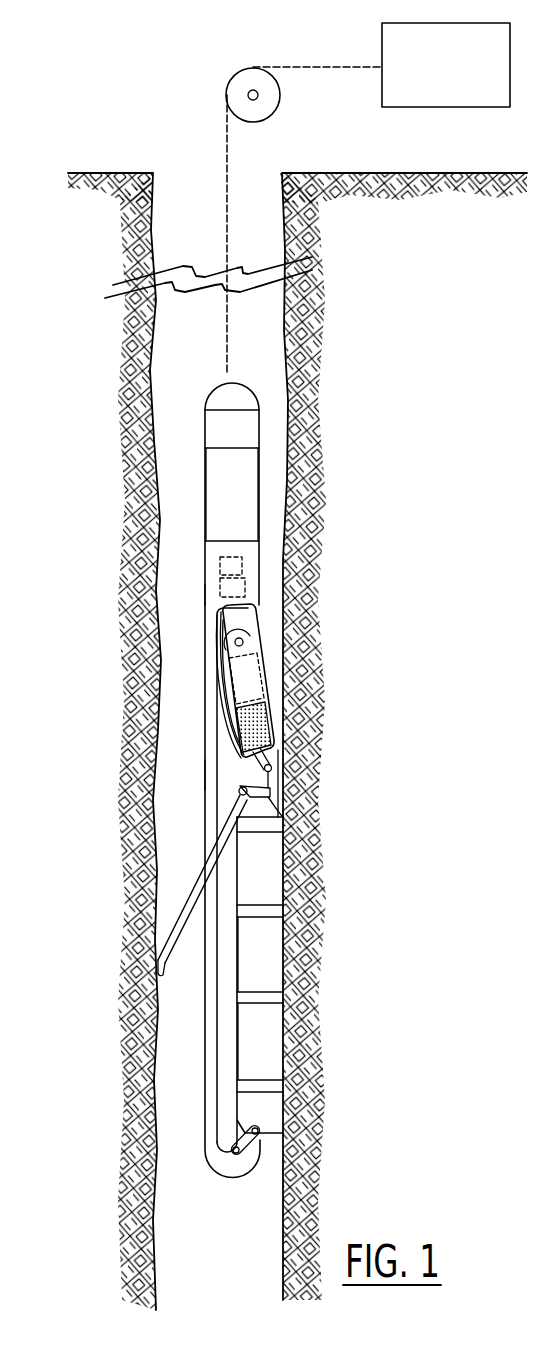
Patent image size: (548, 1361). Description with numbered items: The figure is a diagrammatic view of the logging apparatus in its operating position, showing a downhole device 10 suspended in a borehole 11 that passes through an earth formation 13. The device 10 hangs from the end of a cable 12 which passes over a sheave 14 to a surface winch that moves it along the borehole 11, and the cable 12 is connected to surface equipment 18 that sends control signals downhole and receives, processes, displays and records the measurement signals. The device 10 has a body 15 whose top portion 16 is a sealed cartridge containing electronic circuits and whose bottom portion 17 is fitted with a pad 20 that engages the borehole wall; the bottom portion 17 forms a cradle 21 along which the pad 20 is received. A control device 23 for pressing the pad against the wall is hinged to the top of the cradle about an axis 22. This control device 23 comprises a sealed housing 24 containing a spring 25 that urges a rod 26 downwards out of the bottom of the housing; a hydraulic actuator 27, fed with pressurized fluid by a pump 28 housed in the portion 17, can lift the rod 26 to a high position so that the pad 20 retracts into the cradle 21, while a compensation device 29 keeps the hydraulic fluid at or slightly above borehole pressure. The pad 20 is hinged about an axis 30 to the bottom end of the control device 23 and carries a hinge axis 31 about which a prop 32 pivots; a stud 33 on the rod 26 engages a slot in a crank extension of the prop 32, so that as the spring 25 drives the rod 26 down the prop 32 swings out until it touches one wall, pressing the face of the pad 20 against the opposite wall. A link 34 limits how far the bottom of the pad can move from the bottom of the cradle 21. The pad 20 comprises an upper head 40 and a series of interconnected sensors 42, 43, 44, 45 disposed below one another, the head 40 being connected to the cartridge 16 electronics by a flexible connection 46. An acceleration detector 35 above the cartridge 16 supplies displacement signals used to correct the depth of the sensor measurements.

The downhole device 10 is at (196, 510).
The borehole 11 is at (263, 302).
The cable 12 is at (225, 167).
The earth formation 13 is at (300, 353).
The sheave 14 is at (243, 78).
The body 15 is at (203, 595).
The top portion 16 is at (240, 487).
The bottom portion 17 is at (250, 548).
The surface equipment 18 is at (478, 90).
The pad 20 is at (232, 987).
The cradle 21 is at (207, 775).
The axis 22 is at (250, 635).
The control device 23 is at (280, 688).
The sealed housing 24 is at (217, 692).
The spring 25 is at (282, 718).
The rod 26 is at (280, 752).
The hydraulic actuator 27 is at (260, 665).
The pump 28 is at (245, 587).
The compensation device 29 is at (220, 565).
The axis 30 is at (273, 780).
The hinge axis 31 is at (225, 795).
The prop 32 is at (187, 892).
The stud 33 is at (277, 813).
The link 34 is at (257, 1137).
The acceleration detector 35 is at (240, 427).
The upper head 40 is at (277, 843).
The sensor 42 is at (263, 873).
The sensor 43 is at (272, 952).
The sensor 44 is at (270, 1030).
The sensor 45 is at (270, 1105).
The flexible connection 46 is at (223, 727).